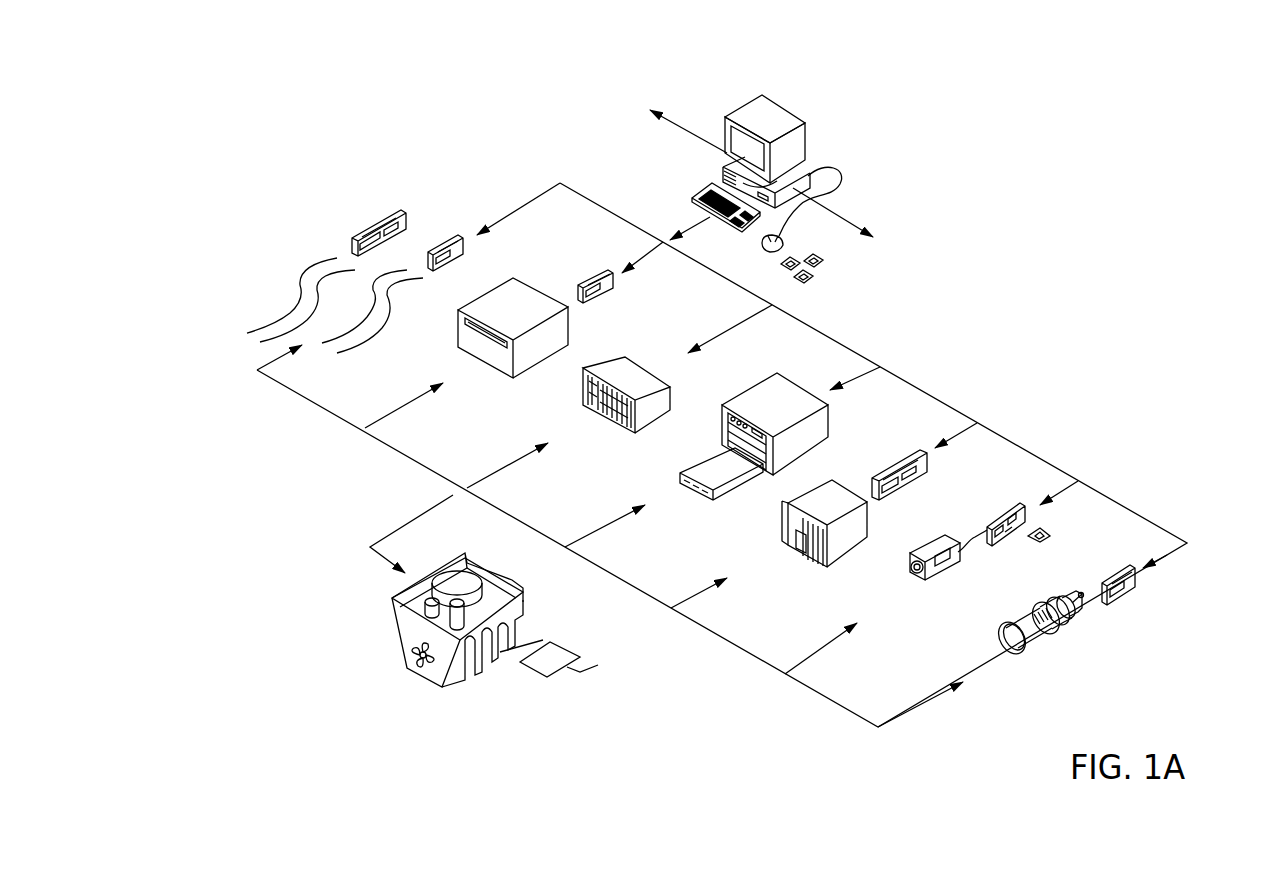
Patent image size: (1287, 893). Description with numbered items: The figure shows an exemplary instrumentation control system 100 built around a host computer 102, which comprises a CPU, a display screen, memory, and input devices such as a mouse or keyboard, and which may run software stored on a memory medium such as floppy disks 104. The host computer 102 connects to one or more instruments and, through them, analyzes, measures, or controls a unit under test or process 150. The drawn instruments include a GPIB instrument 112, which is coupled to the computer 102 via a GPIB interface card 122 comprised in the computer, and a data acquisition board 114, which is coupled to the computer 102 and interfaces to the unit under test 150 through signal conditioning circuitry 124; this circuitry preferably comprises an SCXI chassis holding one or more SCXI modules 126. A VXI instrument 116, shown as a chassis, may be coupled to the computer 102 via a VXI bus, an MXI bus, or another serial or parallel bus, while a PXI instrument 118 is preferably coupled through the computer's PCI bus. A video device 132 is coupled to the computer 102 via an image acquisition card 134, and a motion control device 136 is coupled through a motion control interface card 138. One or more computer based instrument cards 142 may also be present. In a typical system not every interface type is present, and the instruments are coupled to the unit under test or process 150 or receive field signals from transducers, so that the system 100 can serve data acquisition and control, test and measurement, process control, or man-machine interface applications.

The instrumentation control system 100 is at (1060, 142).
The host computer 102 is at (783, 122).
The floppy disks 104 is at (797, 287).
The GPIB instrument 112 is at (505, 303).
The data acquisition board 114 is at (917, 448).
The VXI instrument 116 is at (768, 400).
The PXI instrument 118 is at (615, 367).
The GPIB interface card 122 is at (593, 273).
The signal conditioning circuitry 124 is at (782, 528).
The SCXI modules 126 is at (802, 552).
The video device 132 is at (948, 540).
The image acquisition card 134 is at (1003, 513).
The motion control device 136 is at (1032, 647).
The motion control interface card 138 is at (1123, 597).
The computer based instrument cards 142 is at (368, 225).
The unit under test or process 150 is at (403, 628).